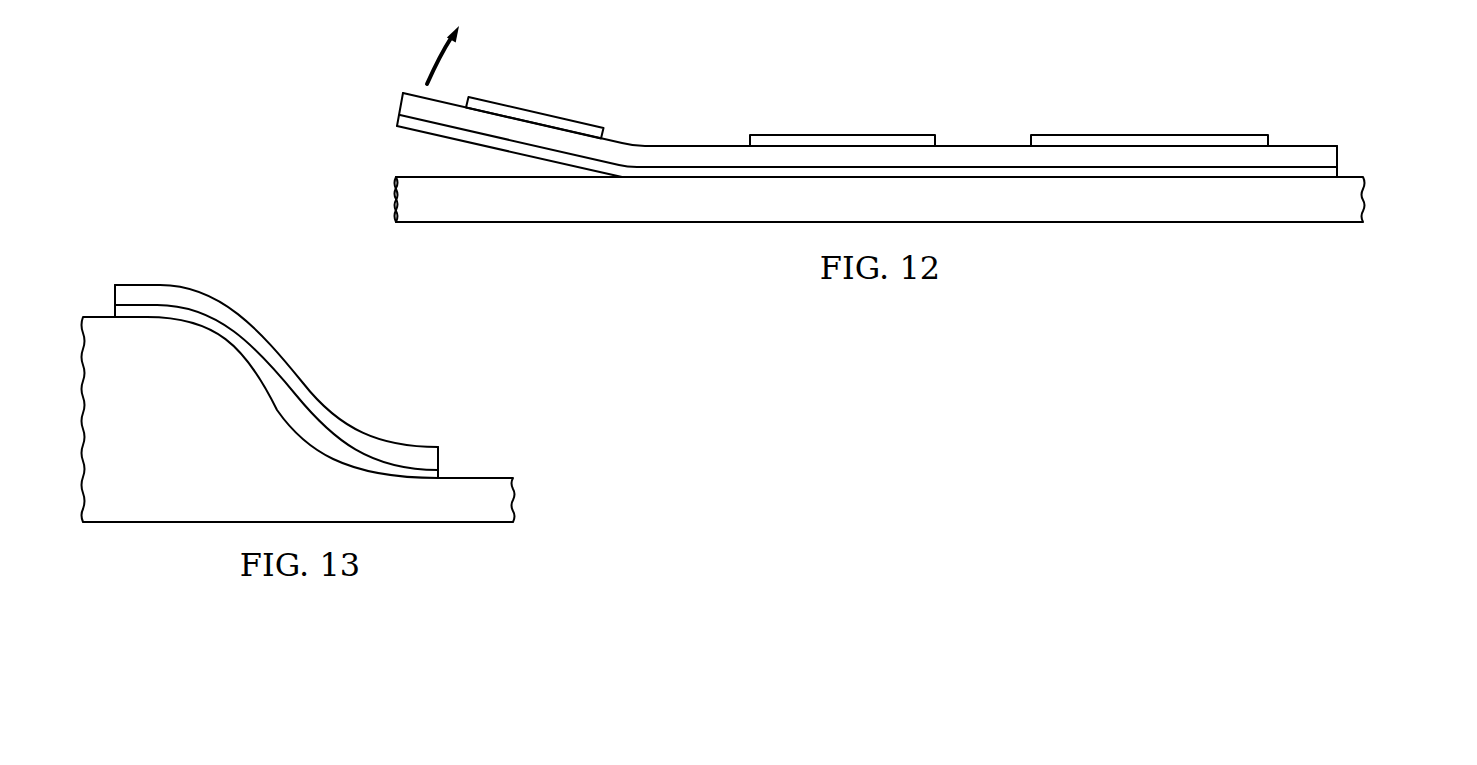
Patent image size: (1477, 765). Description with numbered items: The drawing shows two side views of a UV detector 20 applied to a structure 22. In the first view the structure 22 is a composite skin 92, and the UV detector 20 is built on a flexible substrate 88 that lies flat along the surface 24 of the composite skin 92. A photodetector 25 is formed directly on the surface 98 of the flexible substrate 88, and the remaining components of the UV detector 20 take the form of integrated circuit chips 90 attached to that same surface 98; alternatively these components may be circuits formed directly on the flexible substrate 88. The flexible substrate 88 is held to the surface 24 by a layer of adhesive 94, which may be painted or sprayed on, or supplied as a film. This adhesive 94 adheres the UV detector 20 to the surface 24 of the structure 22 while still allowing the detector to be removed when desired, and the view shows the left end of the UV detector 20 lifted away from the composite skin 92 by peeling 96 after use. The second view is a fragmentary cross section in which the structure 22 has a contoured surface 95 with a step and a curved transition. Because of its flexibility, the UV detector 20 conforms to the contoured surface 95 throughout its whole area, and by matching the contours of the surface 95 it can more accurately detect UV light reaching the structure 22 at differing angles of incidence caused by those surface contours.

In FIG. 12, the UV detector 20 is at (856, 98).
In FIG. 13, the UV detector 20 is at (313, 381).
In FIG. 12, the structure 22 is at (896, 209).
In FIG. 13, the structure 22 is at (517, 500).
In FIG. 12, the surface 24 is at (1355, 167).
In FIG. 12, the photodetector 25 is at (537, 112).
In FIG. 12, the flexible substrate 88 is at (698, 153).
In FIG. 12, the integrated circuit chips 90 is at (867, 102).
In FIG. 12, the composite skin 92 is at (395, 199).
In FIG. 12, the adhesive 94 is at (397, 121).
In FIG. 13, the adhesive 94 is at (442, 473).
In FIG. 13, the contoured surface 95 is at (266, 373).
In FIG. 12, the peeling 96 is at (430, 58).
In FIG. 12, the surface of the flexible substrate 98 is at (991, 125).